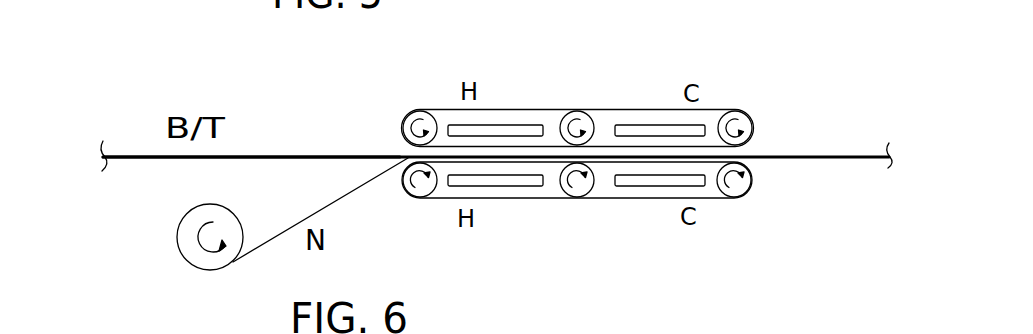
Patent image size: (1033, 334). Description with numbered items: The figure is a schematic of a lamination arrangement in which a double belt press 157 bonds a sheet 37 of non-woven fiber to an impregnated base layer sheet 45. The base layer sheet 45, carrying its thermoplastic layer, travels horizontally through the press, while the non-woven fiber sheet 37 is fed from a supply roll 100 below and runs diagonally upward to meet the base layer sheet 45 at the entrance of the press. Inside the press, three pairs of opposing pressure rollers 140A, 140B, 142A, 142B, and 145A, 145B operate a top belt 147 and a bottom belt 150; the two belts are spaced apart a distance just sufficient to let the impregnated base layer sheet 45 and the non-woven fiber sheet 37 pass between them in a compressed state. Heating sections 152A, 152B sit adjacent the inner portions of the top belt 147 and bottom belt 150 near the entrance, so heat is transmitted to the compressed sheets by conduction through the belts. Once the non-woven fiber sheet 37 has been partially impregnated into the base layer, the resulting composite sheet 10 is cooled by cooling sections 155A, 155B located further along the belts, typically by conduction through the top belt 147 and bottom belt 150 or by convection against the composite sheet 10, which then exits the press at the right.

The composite sheet 10 is at (832, 154).
The impregnated base layer sheet 45 is at (283, 154).
The sheet of non-woven fiber 37 is at (338, 203).
The supply roll 100 is at (178, 238).
The double belt press 157 is at (772, 47).
The top belt 147 is at (562, 111).
The bottom belt 150 is at (548, 198).
The pressure roller 140A is at (411, 112).
The pressure roller 140B is at (417, 198).
The pressure roller 142A is at (580, 112).
The pressure roller 142B is at (582, 198).
The pressure roller 145A is at (748, 115).
The pressure roller 145B is at (752, 180).
The heating section 152A is at (513, 125).
The heating section 152B is at (510, 187).
The cooling section 155A is at (700, 124).
The cooling section 155B is at (694, 187).